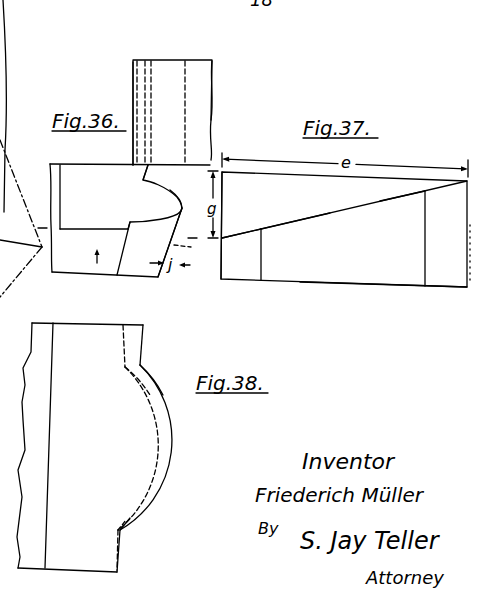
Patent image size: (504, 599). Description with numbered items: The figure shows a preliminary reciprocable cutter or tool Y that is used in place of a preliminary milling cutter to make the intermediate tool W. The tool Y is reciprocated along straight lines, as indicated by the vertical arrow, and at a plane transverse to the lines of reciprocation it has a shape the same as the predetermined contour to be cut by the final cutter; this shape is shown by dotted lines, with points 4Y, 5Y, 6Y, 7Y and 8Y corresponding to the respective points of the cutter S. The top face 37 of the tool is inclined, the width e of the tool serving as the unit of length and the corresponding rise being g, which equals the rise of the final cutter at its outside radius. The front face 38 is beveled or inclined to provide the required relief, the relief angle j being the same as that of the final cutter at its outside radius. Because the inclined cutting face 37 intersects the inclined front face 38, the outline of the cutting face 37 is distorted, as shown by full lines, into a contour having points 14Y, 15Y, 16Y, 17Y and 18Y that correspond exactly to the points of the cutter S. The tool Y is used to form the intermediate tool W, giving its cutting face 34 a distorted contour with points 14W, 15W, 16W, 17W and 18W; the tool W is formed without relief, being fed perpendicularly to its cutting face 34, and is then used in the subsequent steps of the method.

In FIG. 38, the point of predetermined contour 4Y is at (124, 324).
In FIG. 38, the point of predetermined contour 5Y is at (125, 366).
In FIG. 38, the point of predetermined contour 6Y is at (158, 448).
In FIG. 38, the point of predetermined contour 7Y is at (118, 530).
In FIG. 38, the point of predetermined contour 8Y is at (117, 568).
In FIG. 36, the point of distorted contour of tool W 14W is at (185, 60).
In FIG. 36, the point of distorted contour of tool W 15W is at (149, 60).
In FIG. 36, the point of distorted contour of tool W 16W is at (210, 60).
In FIG. 36, the point of distorted contour of tool W 17W is at (137, 60).
In FIG. 36, the point of distorted contour of tool W 18W is at (133, 61).
In FIG. 36, the point of distorted cutting-face contour 14Y is at (150, 168).
In FIG. 37, the point of distorted cutting-face contour 14Y is at (446, 238).
In FIG. 38, the point of distorted cutting-face contour 14Y is at (143, 325).
In FIG. 36, the point of distorted cutting-face contour 15Y is at (144, 181).
In FIG. 37, the point of distorted cutting-face contour 15Y is at (427, 190).
In FIG. 38, the point of distorted cutting-face contour 15Y is at (141, 365).
In FIG. 36, the point of distorted cutting-face contour 16Y is at (183, 205).
In FIG. 37, the point of distorted cutting-face contour 16Y is at (344, 209).
In FIG. 38, the point of distorted cutting-face contour 16Y is at (172, 446).
In FIG. 36, the point of distorted cutting-face contour 17Y is at (131, 222).
In FIG. 37, the point of distorted cutting-face contour 17Y is at (295, 209).
In FIG. 38, the point of distorted cutting-face contour 17Y is at (122, 530).
In FIG. 36, the point of distorted cutting-face contour 18Y is at (130, 230).
In FIG. 37, the point of distorted cutting-face contour 18Y is at (241, 241).
In FIG. 38, the point of distorted cutting-face contour 18Y is at (120, 570).
In FIG. 36, the cutting face 34 is at (215, 61).
In FIG. 36, the top face 37 is at (87, 178).
In FIG. 37, the top face 37 is at (377, 201).
In FIG. 38, the top face 37 is at (73, 337).
In FIG. 36, the front face 38 is at (43, 228).
In FIG. 37, the front face 38 is at (377, 268).